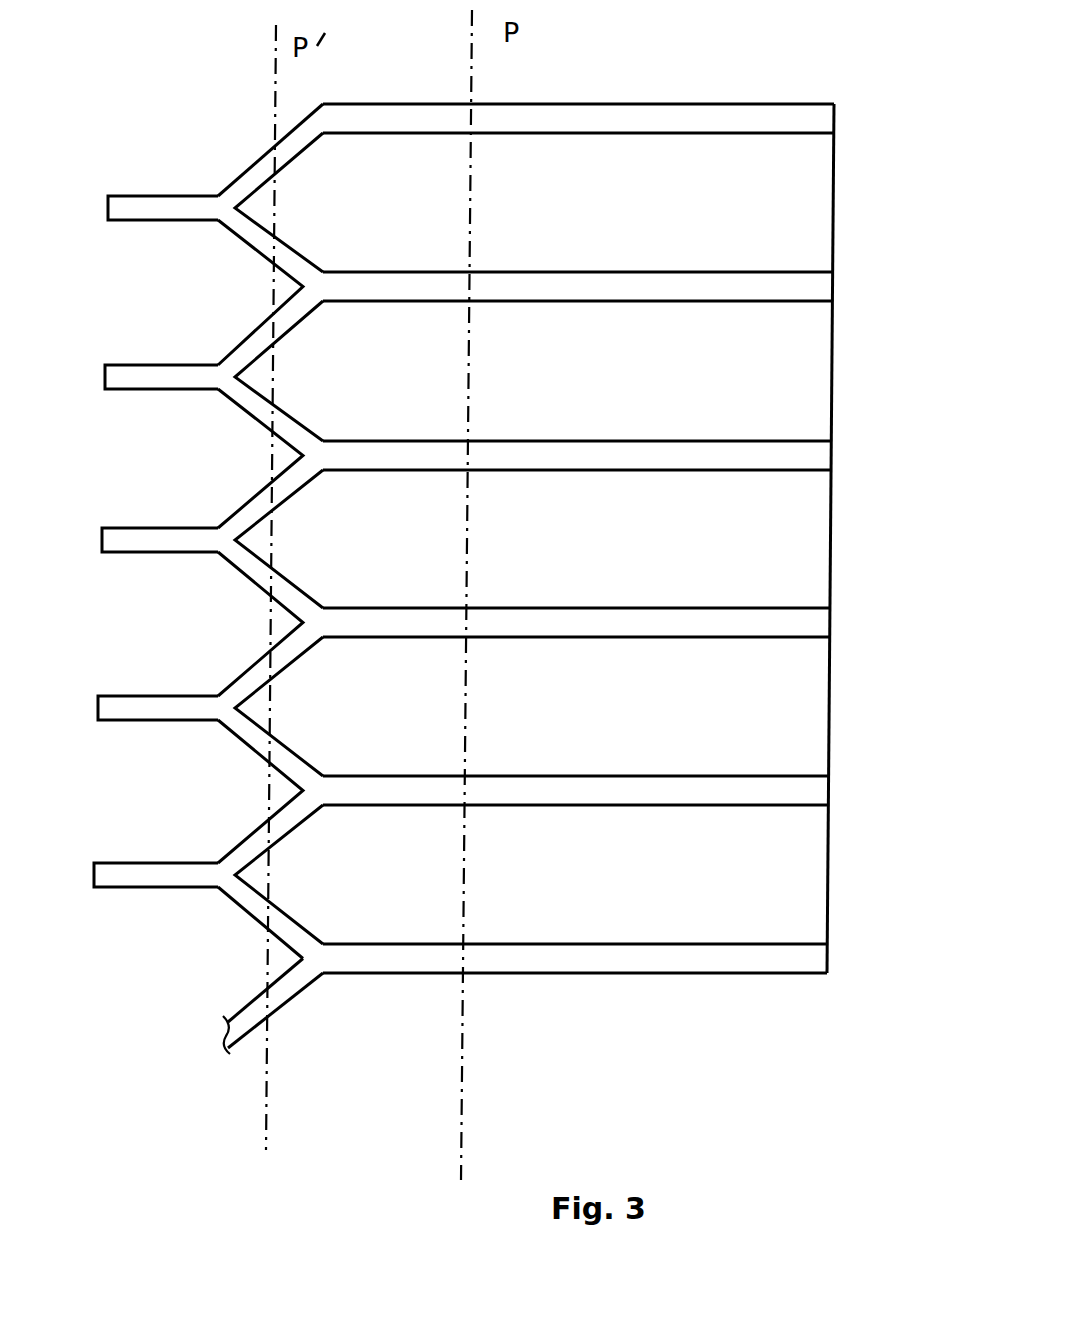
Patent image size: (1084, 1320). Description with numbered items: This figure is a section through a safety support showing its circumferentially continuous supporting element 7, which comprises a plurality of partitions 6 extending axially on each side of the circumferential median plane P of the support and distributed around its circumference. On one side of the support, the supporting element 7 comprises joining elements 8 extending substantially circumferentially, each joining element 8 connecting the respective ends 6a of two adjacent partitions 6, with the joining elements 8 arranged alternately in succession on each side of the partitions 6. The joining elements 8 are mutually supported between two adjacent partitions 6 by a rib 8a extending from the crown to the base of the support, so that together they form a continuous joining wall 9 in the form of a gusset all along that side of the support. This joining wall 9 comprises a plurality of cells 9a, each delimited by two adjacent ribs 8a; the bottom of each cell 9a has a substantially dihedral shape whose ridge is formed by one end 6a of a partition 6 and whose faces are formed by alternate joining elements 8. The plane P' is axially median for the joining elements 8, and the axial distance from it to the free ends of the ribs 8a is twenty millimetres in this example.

The partition 6 is at (598, 1016).
The end of partition 6a is at (325, 442).
The supporting element 7 is at (868, 388).
The joining element 8 is at (250, 787).
The rib 8a is at (155, 208).
The joining wall 9 is at (213, 531).
The cell 9a is at (228, 919).